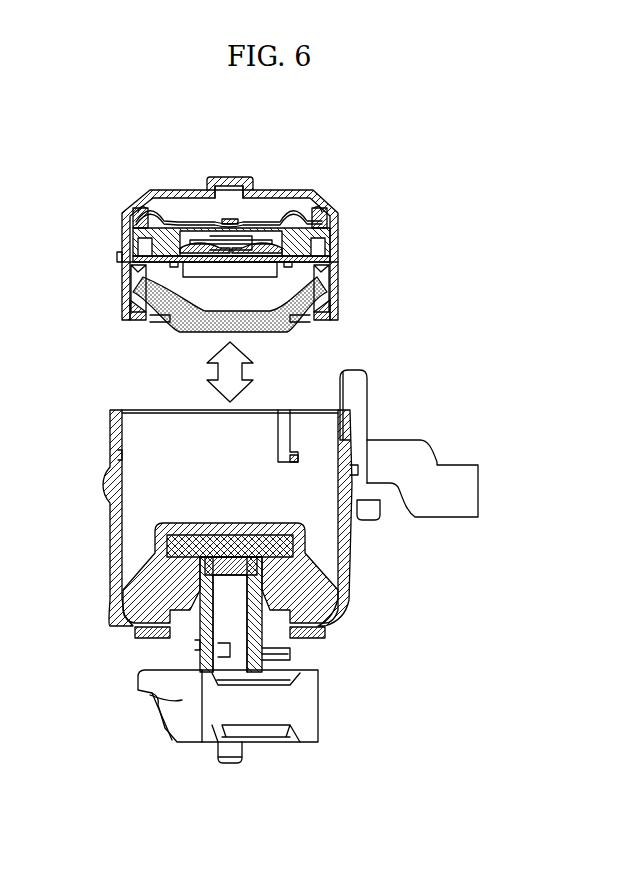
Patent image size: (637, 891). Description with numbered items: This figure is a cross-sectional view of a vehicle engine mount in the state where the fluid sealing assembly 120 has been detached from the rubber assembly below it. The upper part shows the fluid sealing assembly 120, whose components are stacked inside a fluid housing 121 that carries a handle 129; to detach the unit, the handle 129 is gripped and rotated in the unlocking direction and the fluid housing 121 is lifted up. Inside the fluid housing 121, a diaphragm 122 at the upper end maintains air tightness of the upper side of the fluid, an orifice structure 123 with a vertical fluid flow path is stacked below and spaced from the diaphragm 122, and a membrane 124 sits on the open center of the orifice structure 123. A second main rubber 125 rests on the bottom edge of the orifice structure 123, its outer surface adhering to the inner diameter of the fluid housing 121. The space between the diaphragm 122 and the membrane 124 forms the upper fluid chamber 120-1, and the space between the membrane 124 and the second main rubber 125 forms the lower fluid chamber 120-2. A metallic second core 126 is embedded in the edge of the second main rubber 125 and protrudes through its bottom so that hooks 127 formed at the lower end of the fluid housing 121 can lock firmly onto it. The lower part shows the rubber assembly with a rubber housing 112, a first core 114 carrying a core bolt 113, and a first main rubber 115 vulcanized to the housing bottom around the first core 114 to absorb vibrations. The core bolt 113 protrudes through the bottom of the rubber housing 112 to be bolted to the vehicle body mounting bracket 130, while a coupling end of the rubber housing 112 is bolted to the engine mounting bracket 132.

The fluid sealing assembly 120 is at (229, 399).
The fluid housing 121 is at (160, 186).
The handle 129 is at (247, 176).
The upper fluid chamber 120-1 is at (194, 206).
The diaphragm 122 is at (276, 216).
The orifice structure 123 is at (156, 228).
The membrane 124 is at (152, 254).
The second core 126 is at (133, 290).
The lower fluid chamber 120-2 is at (320, 285).
The hook 127 is at (282, 290).
The second main rubber 125 is at (157, 322).
The engine mounting bracket 132 is at (418, 448).
The rubber housing 112 is at (356, 573).
The first main rubber 115 is at (340, 612).
The first core 114 is at (268, 636).
The core bolt 113 is at (237, 657).
The vehicle body mounting bracket 130 is at (300, 723).